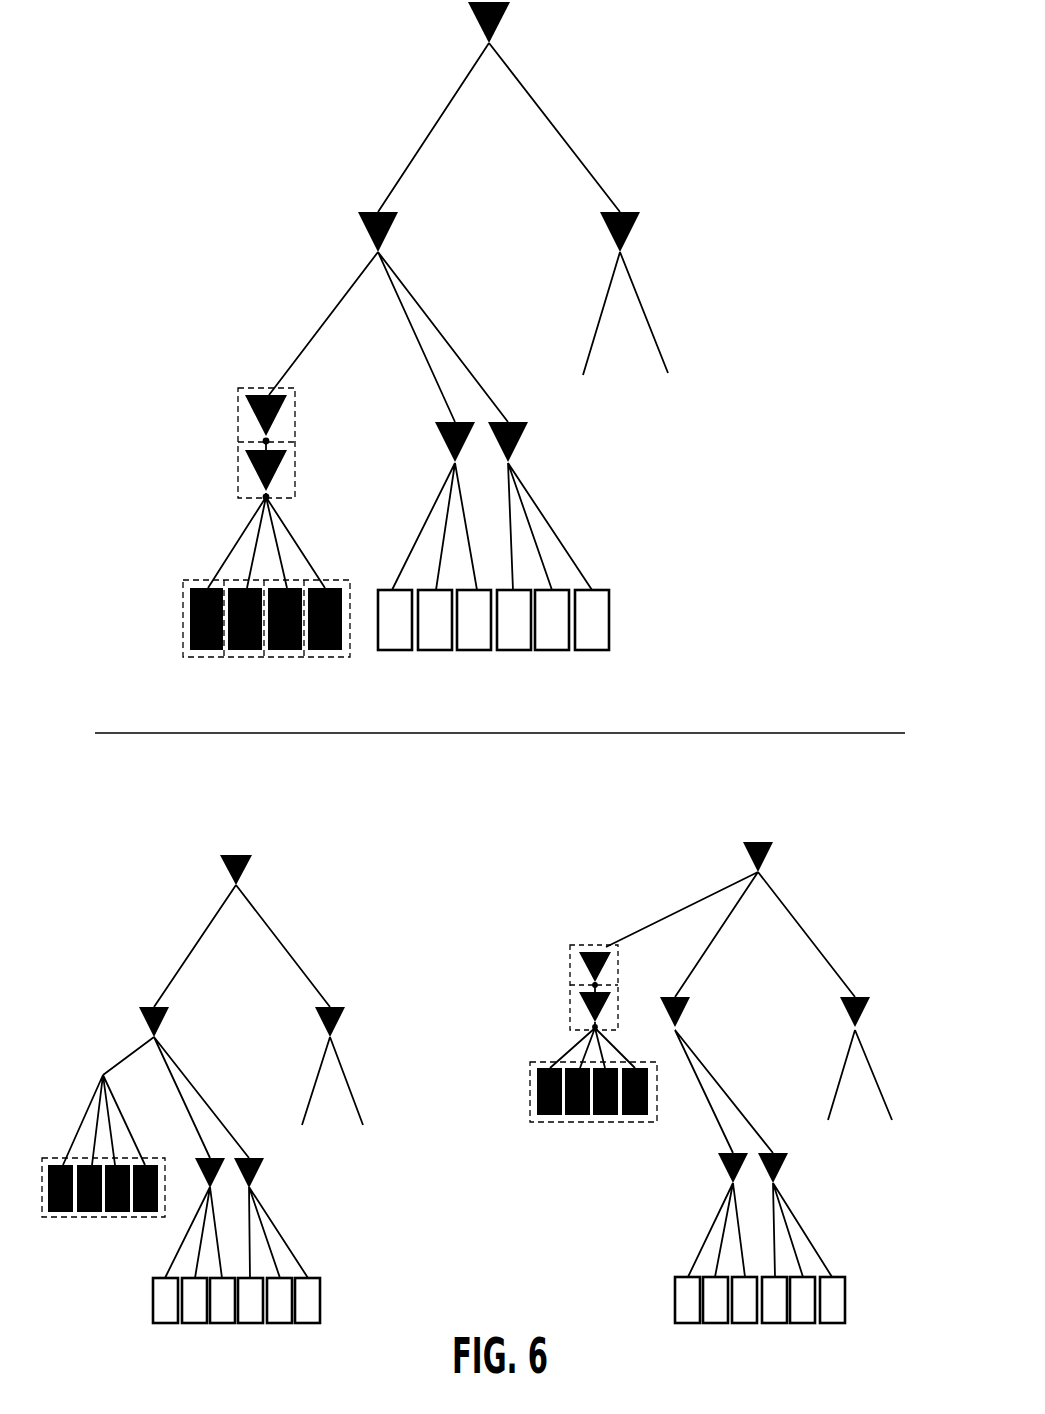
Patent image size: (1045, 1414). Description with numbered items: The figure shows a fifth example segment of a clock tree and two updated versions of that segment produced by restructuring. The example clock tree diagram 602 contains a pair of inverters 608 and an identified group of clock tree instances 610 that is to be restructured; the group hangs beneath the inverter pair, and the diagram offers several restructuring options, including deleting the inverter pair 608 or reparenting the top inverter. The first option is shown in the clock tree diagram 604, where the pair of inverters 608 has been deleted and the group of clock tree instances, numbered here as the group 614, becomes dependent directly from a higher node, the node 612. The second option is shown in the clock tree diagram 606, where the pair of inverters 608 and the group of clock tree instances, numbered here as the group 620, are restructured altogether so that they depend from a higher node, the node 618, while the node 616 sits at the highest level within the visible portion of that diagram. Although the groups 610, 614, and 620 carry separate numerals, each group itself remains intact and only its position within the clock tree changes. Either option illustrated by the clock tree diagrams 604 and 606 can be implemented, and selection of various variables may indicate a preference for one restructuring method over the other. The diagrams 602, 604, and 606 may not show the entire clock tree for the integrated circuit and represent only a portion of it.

The clock tree diagram 602 is at (296, 12).
The clock tree diagram 604 is at (173, 822).
The clock tree diagram 606 is at (628, 822).
The pair of inverters 608 is at (240, 412).
The group of clock tree instances 610 is at (188, 635).
The node 612 is at (150, 1027).
The group of clock tree instances 614 is at (128, 1218).
The node 616 is at (770, 851).
The node 618 is at (572, 972).
The group of clock tree instances 620 is at (535, 1092).